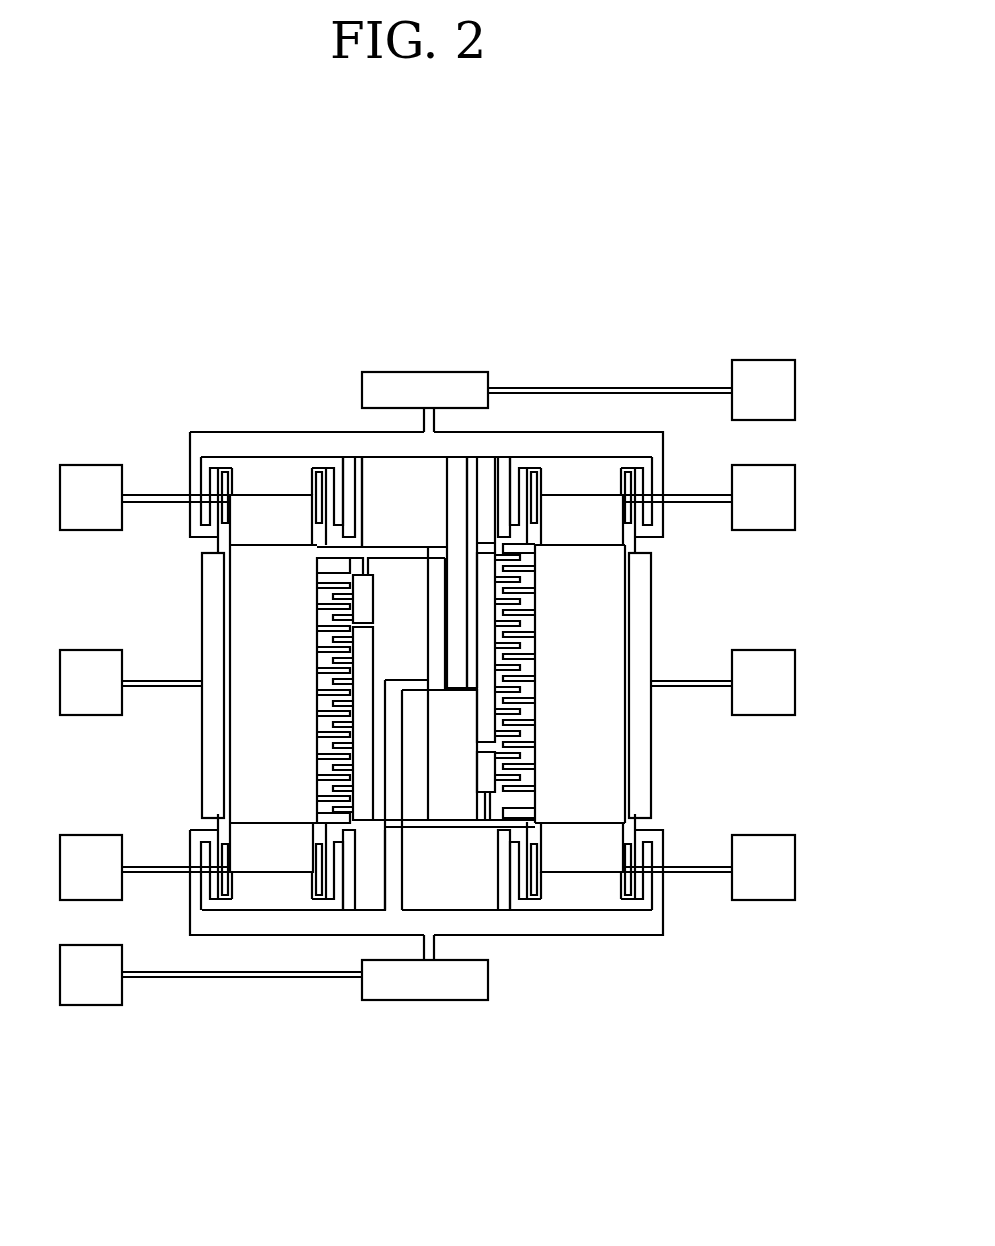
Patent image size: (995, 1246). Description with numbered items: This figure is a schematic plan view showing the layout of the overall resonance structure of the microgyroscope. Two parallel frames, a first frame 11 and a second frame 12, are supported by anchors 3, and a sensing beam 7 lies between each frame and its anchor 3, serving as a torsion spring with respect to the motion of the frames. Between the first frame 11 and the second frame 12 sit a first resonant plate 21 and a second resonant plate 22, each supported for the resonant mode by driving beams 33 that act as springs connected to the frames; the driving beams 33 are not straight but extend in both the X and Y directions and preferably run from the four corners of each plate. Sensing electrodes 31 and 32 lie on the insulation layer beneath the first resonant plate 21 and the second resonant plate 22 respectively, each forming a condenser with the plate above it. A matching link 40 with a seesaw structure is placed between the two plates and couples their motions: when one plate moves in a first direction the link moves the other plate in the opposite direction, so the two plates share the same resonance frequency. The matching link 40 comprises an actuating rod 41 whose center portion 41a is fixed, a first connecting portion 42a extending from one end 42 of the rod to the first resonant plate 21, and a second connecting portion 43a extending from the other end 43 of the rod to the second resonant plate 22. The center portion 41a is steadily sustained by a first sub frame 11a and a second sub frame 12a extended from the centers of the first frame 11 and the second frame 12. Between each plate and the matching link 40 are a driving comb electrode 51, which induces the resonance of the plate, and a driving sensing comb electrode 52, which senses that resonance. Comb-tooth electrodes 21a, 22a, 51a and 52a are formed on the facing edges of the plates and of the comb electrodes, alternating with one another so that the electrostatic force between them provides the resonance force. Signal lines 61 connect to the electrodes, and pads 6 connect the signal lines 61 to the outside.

The anchor 3 is at (455, 1000).
The pad 6 is at (85, 1005).
The sensing beam 7 is at (420, 948).
The first frame 11 is at (608, 440).
The first sub frame 11a is at (475, 490).
The second frame 12 is at (636, 935).
The second sub frame 12a is at (385, 893).
The first resonant plate 21 is at (230, 740).
The comb-shaped electrode of first resonant plate 21a is at (327, 770).
The second resonant plate 22 is at (615, 715).
The comb-shaped electrode of second resonant plate 22a is at (525, 545).
The sensing electrode 31 is at (202, 600).
The sensing electrode 32 is at (652, 578).
The driving beam 33 is at (546, 888).
The matching link 40 is at (399, 470).
The actuating rod 41 is at (428, 617).
The center portion of actuating rod 41a is at (429, 690).
The one end of actuating rod 42 is at (425, 547).
The first connecting portion 42a is at (390, 547).
The other end of actuating rod 43 is at (427, 827).
The second connecting portion 43a is at (460, 830).
The driving comb electrode 51 is at (488, 645).
The comb-shaped electrode of driving comb electrode 51a is at (532, 672).
The driving sensing comb electrode 52 is at (532, 790).
The comb-shaped electrode of driving sensing comb electrode 52a is at (532, 748).
The signal line 61 is at (178, 977).